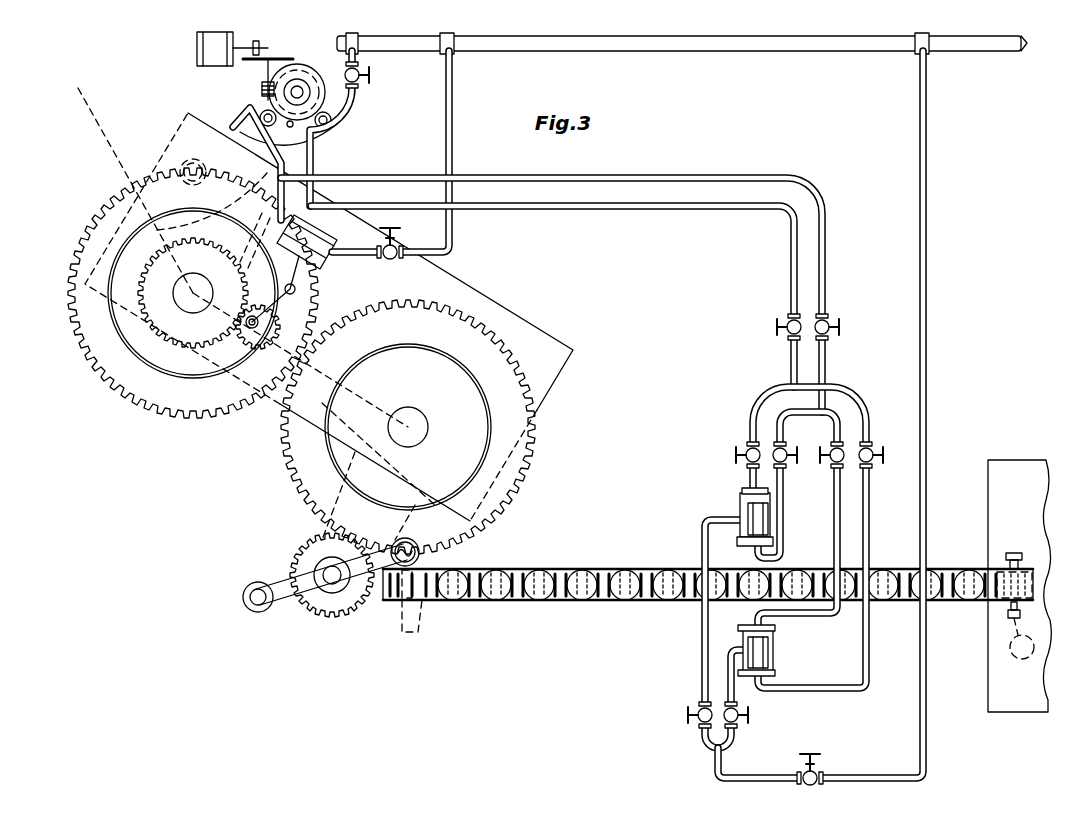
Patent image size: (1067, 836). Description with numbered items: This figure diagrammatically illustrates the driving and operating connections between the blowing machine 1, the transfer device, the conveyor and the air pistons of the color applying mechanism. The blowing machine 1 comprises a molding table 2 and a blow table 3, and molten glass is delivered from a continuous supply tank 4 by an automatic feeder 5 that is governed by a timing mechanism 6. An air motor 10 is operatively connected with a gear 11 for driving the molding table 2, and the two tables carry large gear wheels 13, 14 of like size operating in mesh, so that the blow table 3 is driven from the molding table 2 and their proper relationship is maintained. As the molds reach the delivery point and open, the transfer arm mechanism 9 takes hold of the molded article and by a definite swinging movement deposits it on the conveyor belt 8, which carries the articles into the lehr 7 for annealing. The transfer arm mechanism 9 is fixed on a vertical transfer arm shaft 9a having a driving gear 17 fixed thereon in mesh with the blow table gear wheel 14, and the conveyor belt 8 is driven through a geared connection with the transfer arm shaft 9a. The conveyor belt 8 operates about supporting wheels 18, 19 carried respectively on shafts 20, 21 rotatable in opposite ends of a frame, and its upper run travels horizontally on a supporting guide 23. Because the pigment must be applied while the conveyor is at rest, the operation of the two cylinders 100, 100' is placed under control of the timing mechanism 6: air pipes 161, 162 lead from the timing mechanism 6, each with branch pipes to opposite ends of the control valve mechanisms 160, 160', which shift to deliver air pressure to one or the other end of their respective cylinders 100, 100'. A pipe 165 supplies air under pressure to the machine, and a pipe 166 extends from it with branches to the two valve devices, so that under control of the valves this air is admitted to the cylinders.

The blowing machine 1 is at (528, 320).
The molding table 2 is at (130, 372).
The blow table 3 is at (490, 465).
The continuous supply tank 4 is at (110, 166).
The automatic feeder 5 is at (184, 162).
The timing mechanism 6 is at (333, 96).
The lehr 7 is at (988, 679).
The conveyor belt 8 is at (547, 604).
The transfer arm mechanism 9 is at (302, 604).
The transfer arm shaft 9a is at (328, 618).
The air motor 10 is at (333, 252).
The gear 11 is at (195, 350).
The large gear wheel 13 is at (70, 329).
The large gear wheel 14 is at (290, 478).
The driving gear 17 is at (292, 556).
The supporting wheel 18 is at (418, 604).
The supporting wheel 19 is at (1000, 600).
The shaft 20 is at (408, 612).
The shaft 21 is at (1021, 638).
The supporting guide 23 is at (634, 602).
The cylinder 100 is at (786, 654).
The cylinder 100' is at (788, 519).
The control valve mechanism 160 is at (782, 637).
The control valve mechanism 160' is at (731, 495).
The air pipe 161 is at (725, 208).
The air pipe 162 is at (826, 229).
The pipe 165 is at (970, 47).
The pipe 166 is at (926, 366).